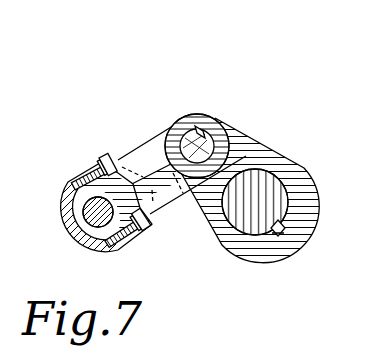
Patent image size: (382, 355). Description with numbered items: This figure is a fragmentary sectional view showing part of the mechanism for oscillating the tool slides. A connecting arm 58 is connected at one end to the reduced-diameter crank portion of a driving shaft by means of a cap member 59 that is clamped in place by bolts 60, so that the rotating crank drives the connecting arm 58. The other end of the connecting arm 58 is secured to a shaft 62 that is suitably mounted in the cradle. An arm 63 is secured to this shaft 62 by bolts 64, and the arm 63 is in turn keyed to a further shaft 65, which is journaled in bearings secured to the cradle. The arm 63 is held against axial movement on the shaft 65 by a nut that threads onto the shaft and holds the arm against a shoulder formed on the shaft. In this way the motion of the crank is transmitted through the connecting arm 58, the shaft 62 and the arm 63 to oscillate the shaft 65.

The connecting arm 58 is at (146, 162).
The cap member 59 is at (73, 222).
The bolts 60 is at (153, 228).
The shaft 62 is at (209, 132).
The arm 63 is at (255, 202).
The bolts 64 is at (192, 130).
The shaft 65 is at (262, 160).